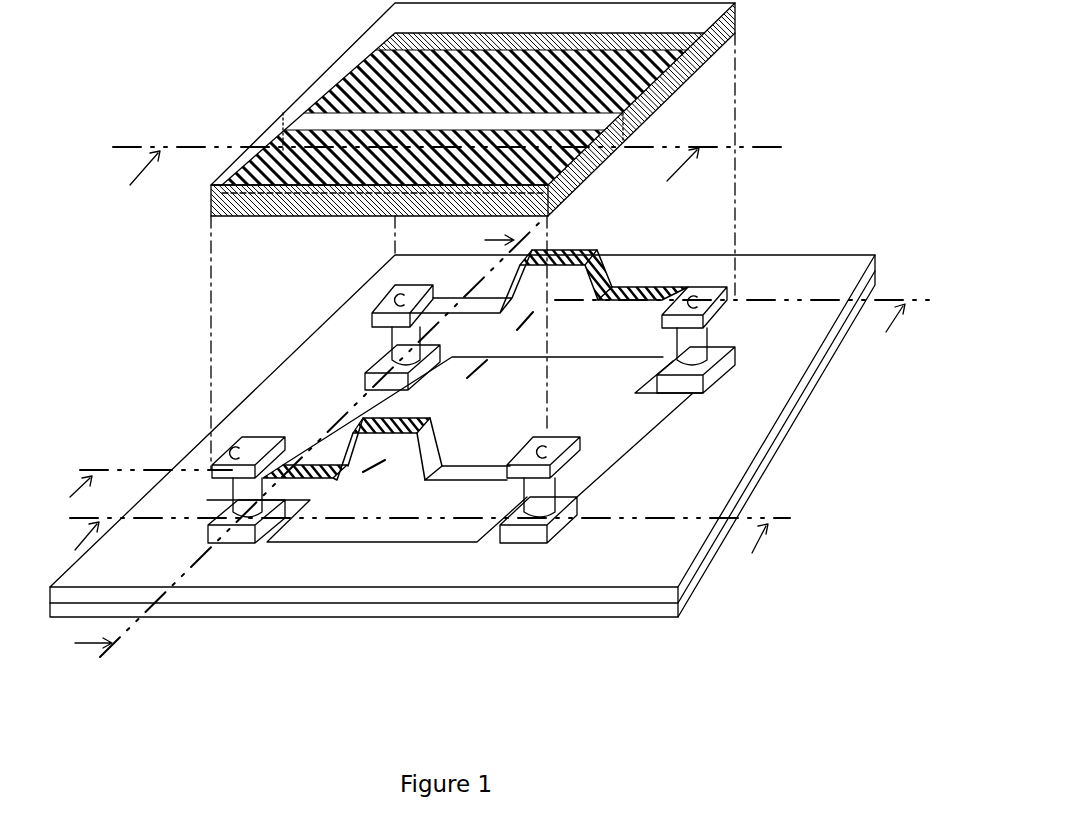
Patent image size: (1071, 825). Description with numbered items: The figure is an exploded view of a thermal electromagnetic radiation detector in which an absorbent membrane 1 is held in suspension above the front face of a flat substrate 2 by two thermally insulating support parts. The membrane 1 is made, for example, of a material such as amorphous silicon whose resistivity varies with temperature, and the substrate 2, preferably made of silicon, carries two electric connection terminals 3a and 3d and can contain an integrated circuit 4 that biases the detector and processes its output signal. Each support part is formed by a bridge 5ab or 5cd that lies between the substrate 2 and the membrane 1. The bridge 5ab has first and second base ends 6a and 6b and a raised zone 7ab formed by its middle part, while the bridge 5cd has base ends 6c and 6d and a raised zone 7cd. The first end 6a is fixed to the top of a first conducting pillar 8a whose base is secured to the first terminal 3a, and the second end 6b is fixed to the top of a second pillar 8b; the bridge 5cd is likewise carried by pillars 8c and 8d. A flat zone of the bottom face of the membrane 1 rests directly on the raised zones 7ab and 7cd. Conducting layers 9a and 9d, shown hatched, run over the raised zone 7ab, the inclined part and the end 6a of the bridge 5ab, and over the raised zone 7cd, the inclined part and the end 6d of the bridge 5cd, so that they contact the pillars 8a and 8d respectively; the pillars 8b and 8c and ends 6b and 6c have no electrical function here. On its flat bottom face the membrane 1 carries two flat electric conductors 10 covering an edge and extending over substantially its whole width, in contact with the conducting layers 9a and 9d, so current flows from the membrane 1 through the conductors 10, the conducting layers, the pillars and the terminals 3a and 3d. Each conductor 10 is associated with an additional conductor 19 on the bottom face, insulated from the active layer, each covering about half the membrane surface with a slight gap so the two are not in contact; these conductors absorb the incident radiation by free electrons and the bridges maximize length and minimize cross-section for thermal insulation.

The absorbent membrane 1 is at (290, 81).
The substrate 2 is at (386, 608).
The first electric connection terminal 3a is at (233, 540).
The electric connection terminal 3d is at (703, 382).
The integrated circuit 4 is at (633, 597).
The bridge 5ab is at (459, 443).
The bridge 5cd is at (669, 283).
The first base end 6a is at (325, 483).
The second base end 6b is at (462, 470).
The base end 6c is at (448, 300).
The base end 6d is at (608, 318).
The raised zone 7ab is at (366, 426).
The raised zone 7cd is at (570, 250).
The first conducting pillar 8a is at (240, 496).
The second pillar 8b is at (537, 489).
The pillar 8c is at (396, 343).
The conducting pillar 8d is at (707, 336).
The conducting layer 9a is at (288, 466).
The conducting layer 9d is at (600, 276).
The flat electric conductor 10 is at (735, 32).
The additional conductor 19 is at (700, 72).